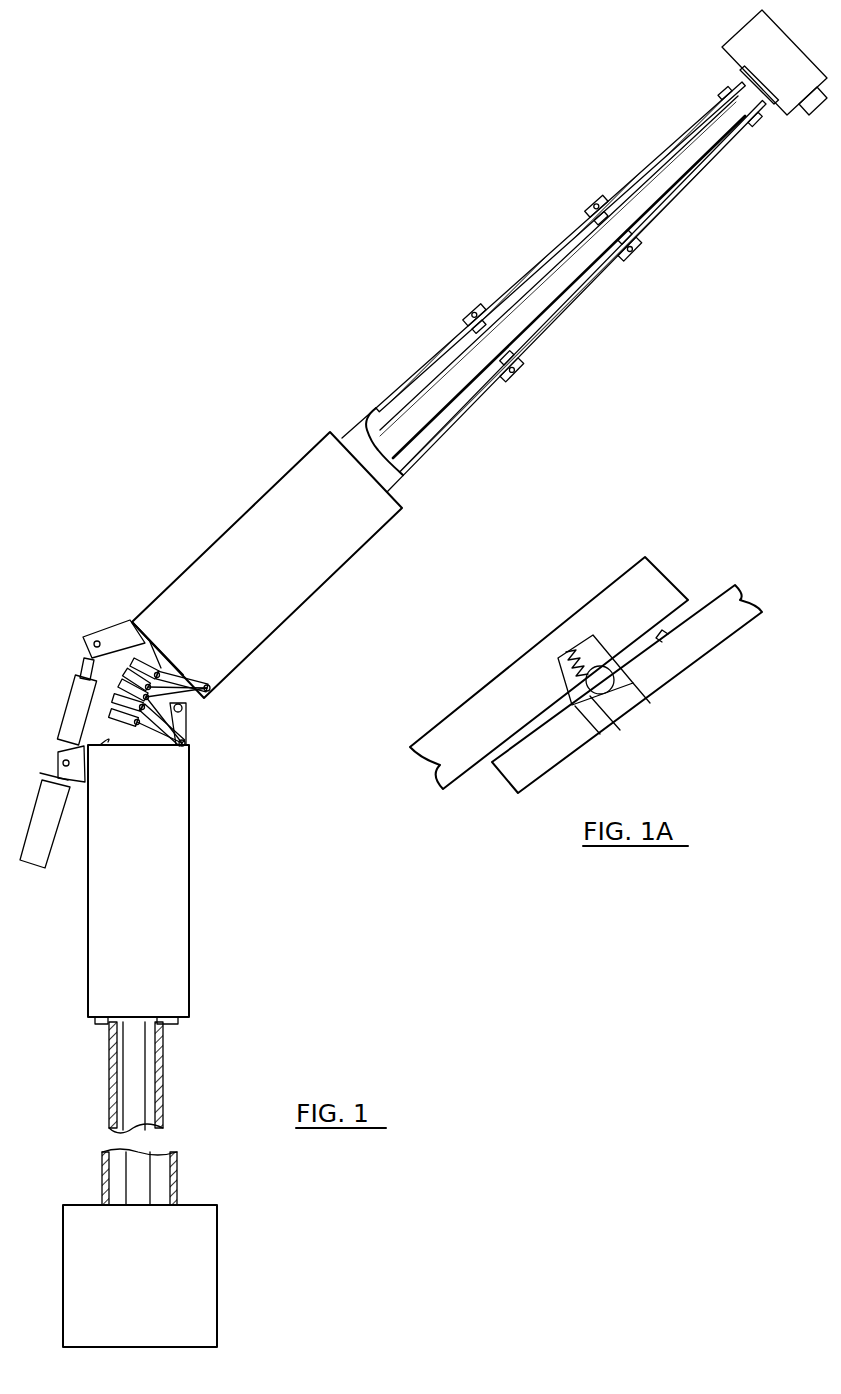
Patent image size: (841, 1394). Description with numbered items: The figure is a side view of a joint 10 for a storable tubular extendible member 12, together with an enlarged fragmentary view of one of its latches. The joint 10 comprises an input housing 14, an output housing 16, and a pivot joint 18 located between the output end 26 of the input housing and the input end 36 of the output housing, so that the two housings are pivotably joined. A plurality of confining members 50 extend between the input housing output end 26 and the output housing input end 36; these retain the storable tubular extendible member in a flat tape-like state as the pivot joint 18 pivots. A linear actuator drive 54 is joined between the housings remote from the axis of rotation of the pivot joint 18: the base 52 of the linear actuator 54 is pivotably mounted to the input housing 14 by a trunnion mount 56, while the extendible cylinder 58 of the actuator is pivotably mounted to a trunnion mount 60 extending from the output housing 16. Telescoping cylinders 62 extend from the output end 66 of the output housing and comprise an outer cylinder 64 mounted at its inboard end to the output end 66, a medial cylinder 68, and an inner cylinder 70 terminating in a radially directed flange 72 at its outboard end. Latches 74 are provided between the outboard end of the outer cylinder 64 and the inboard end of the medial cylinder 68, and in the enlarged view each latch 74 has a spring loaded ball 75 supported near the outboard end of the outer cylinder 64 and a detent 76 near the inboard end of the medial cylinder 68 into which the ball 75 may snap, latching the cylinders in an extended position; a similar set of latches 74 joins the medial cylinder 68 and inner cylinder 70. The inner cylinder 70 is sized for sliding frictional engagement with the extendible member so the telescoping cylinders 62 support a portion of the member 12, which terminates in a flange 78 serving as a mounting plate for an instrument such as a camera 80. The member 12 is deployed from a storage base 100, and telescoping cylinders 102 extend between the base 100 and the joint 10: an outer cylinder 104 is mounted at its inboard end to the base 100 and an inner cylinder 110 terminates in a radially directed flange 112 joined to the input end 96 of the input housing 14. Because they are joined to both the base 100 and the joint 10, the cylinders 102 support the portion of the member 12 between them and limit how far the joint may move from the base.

In FIG. 1, the joint 10 is at (100, 466).
In FIG. 1, the storable tubular extendible member 12 is at (423, 383).
In FIG. 1, the input housing 14 is at (190, 796).
In FIG. 1, the output housing 16 is at (336, 582).
In FIG. 1, the pivot joint 18 is at (186, 712).
In FIG. 1, the output end of the input housing 26 is at (108, 744).
In FIG. 1, the input end of the output housing 36 is at (163, 650).
In FIG. 1, the confining members 50 is at (104, 697).
In FIG. 1, the base of the linear actuator 52 is at (48, 765).
In FIG. 1, the linear actuator drive 54 is at (35, 822).
In FIG. 1, the trunnion mount 56 is at (64, 740).
In FIG. 1, the extendible cylinder 58 is at (86, 668).
In FIG. 1, the trunnion mount 60 is at (117, 628).
In FIG. 1, the telescoping cylinders 62 is at (573, 335).
In FIG. 1, the outer cylinder 64 is at (452, 432).
In FIG. 1A, the outer cylinder 64 is at (496, 686).
In FIG. 1, the output end of the output housing 66 is at (342, 428).
In FIG. 1, the medial cylinder 68 is at (520, 276).
In FIG. 1A, the medial cylinder 68 is at (703, 640).
In FIG. 1, the inner cylinder 70 is at (655, 162).
In FIG. 1, the radially directed flange 72 is at (753, 127).
In FIG. 1, the latches 74 is at (580, 205).
In FIG. 1A, the latches 74 is at (586, 590).
In FIG. 1A, the spring loaded ball 75 is at (604, 684).
In FIG. 1A, the detent 76 is at (598, 728).
In FIG. 1, the flange 78 is at (740, 75).
In FIG. 1, the camera 80 is at (788, 38).
In FIG. 1, the input end of the input housing 96 is at (96, 1024).
In FIG. 1, the storage base 100 is at (218, 1275).
In FIG. 1, the telescoping cylinders 102 is at (192, 1098).
In FIG. 1, the outer cylinder 104 is at (177, 1182).
In FIG. 1, the inner cylinder 110 is at (165, 1064).
In FIG. 1, the radially directed flange 112 is at (172, 1025).